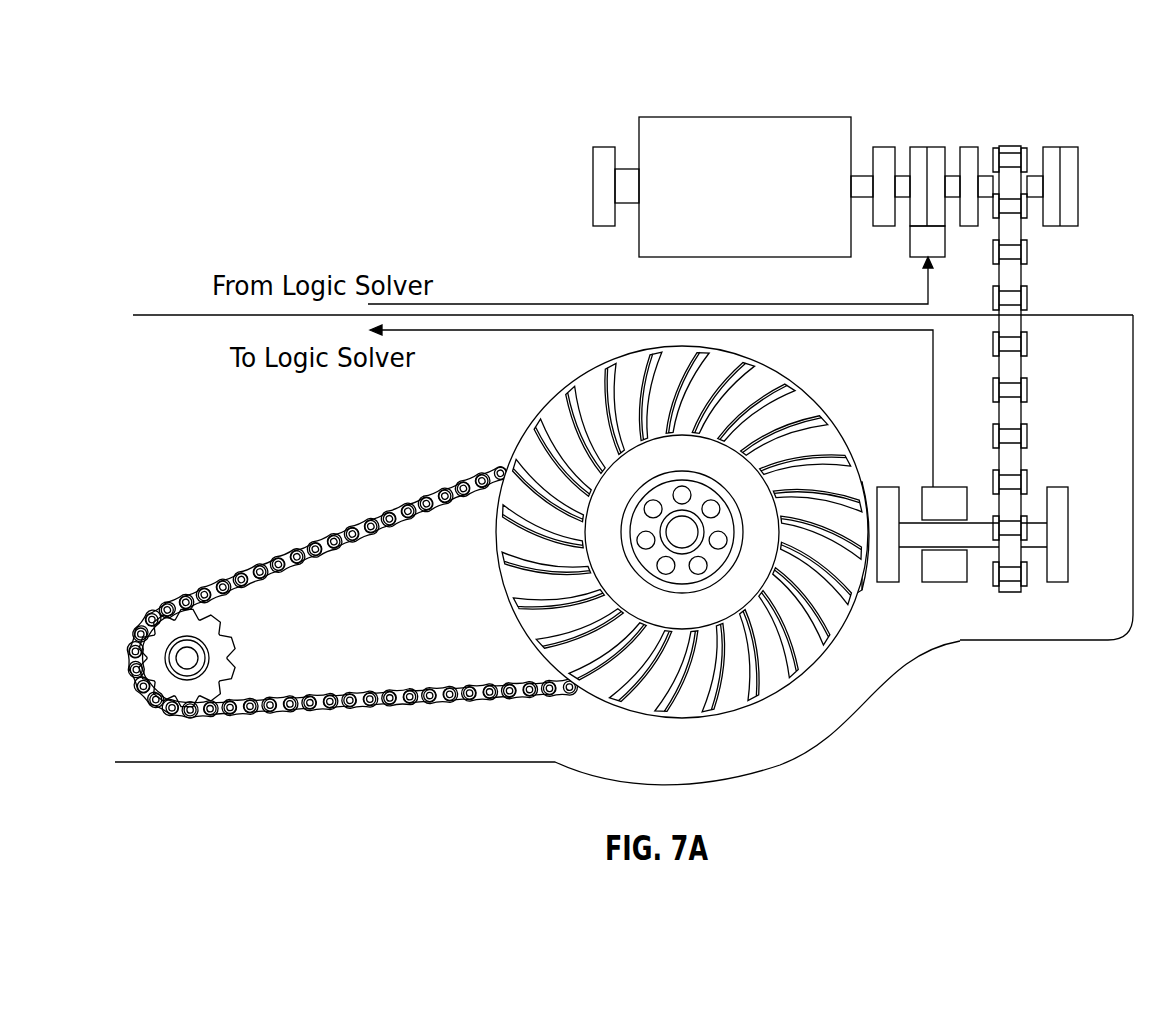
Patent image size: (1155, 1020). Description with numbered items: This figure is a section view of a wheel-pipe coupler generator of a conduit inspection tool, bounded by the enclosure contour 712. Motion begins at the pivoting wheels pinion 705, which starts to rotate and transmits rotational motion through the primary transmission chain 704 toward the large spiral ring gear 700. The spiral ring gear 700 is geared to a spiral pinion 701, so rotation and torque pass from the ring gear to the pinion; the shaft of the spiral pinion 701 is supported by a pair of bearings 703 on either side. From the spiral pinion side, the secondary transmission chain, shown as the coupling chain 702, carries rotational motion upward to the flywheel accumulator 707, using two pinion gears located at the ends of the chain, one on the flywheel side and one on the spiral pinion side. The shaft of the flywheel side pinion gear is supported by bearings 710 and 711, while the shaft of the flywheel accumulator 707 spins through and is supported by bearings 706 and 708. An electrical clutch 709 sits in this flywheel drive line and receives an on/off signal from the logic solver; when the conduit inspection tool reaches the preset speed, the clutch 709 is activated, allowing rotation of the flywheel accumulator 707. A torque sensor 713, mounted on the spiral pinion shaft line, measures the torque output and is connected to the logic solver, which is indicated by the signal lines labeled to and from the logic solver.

The spiral ring gear 700 is at (681, 345).
The spiral pinion 701 is at (868, 470).
The coupling chain 702 is at (1040, 443).
The bearings 703 is at (888, 598).
The chain 704 is at (386, 733).
The pinion 705 is at (183, 607).
The bearing 706 is at (603, 147).
The flywheel accumulator 707 is at (742, 117).
The bearing 708 is at (885, 147).
The electrical clutch 709 is at (922, 147).
The bearing 710 is at (970, 147).
The bearing 711 is at (1050, 147).
The enclosure contour 712 is at (793, 757).
The torque sensor 713 is at (943, 476).